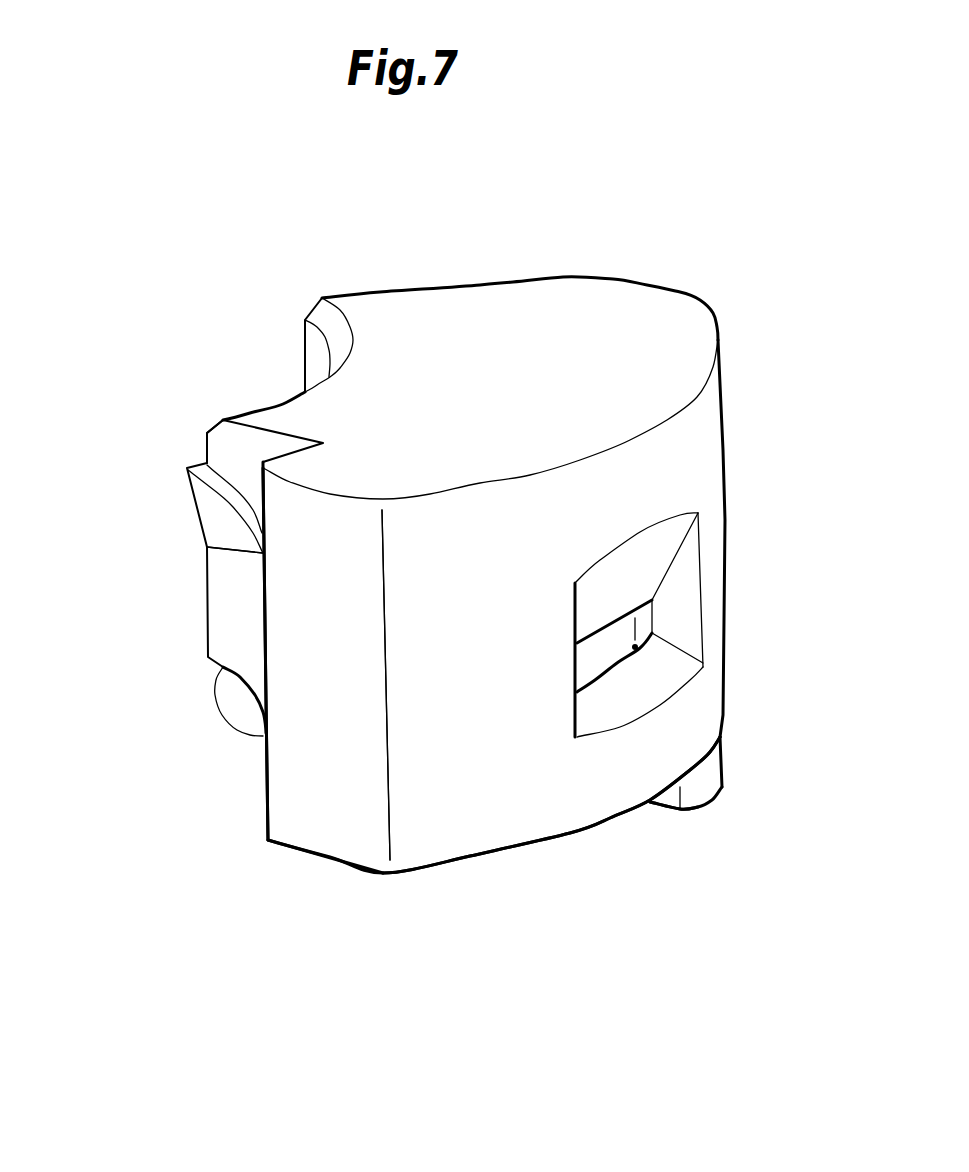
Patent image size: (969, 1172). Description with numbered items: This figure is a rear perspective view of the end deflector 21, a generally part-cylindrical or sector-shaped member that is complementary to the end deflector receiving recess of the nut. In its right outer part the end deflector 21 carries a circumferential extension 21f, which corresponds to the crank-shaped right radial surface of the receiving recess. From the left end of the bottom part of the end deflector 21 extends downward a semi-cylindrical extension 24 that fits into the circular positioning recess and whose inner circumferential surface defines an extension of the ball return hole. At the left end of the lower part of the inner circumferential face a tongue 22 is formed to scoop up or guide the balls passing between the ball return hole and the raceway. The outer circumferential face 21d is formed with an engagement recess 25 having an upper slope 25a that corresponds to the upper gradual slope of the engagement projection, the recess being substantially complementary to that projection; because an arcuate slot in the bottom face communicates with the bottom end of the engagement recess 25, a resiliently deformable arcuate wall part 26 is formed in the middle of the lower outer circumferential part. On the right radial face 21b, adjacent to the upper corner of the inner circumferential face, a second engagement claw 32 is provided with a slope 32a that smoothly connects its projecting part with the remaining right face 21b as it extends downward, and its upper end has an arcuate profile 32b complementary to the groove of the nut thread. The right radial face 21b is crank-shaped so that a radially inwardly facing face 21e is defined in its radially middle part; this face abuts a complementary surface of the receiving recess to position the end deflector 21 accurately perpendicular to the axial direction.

The end deflector 21 is at (490, 272).
The right radial face 21b is at (320, 723).
The outer circumferential face 21d is at (500, 747).
The radially inwardly facing face 21e is at (280, 453).
The circumferential extension 21f is at (363, 837).
The tongue 22 is at (233, 713).
The semi-cylindrical extension 24 is at (717, 777).
The engagement recess 25 is at (640, 650).
The upper slope 25a is at (665, 557).
The resiliently deformable arcuate wall part 26 is at (635, 758).
The second engagement claw 32 is at (187, 488).
The slope 32a is at (207, 507).
The arcuate profile 32b is at (220, 480).